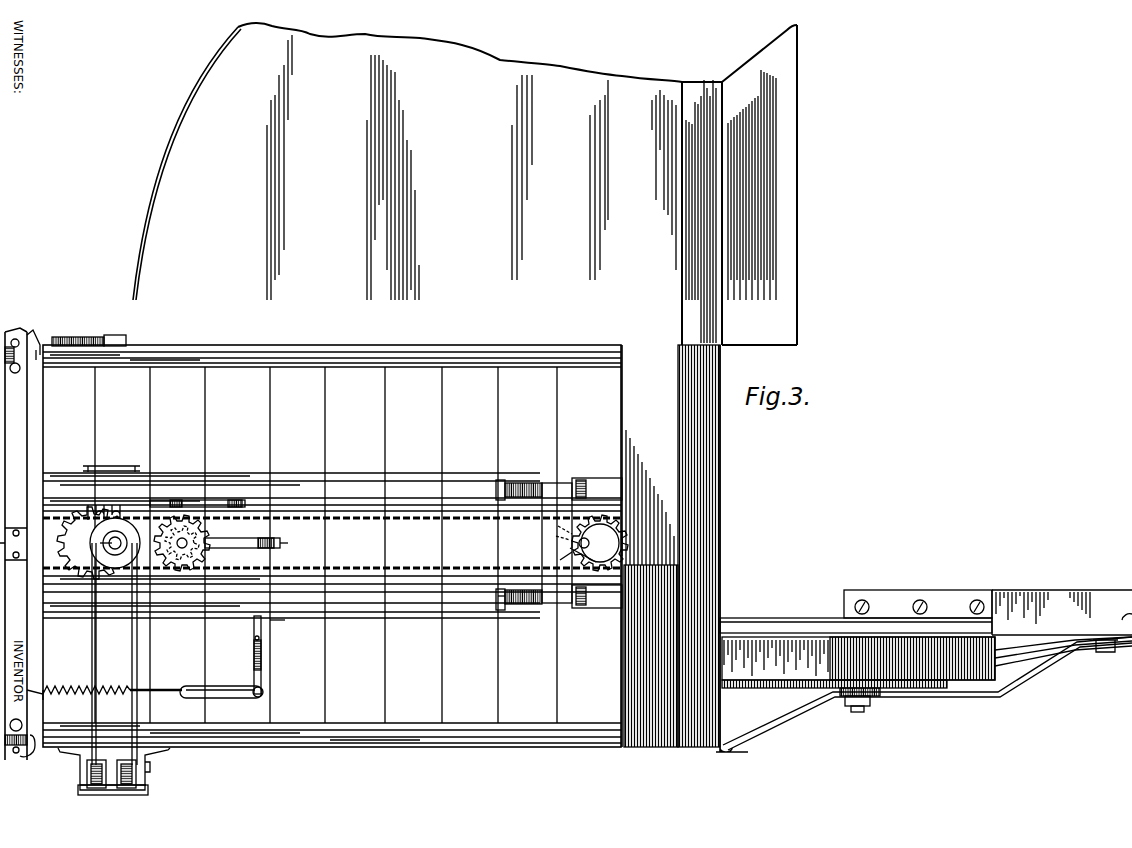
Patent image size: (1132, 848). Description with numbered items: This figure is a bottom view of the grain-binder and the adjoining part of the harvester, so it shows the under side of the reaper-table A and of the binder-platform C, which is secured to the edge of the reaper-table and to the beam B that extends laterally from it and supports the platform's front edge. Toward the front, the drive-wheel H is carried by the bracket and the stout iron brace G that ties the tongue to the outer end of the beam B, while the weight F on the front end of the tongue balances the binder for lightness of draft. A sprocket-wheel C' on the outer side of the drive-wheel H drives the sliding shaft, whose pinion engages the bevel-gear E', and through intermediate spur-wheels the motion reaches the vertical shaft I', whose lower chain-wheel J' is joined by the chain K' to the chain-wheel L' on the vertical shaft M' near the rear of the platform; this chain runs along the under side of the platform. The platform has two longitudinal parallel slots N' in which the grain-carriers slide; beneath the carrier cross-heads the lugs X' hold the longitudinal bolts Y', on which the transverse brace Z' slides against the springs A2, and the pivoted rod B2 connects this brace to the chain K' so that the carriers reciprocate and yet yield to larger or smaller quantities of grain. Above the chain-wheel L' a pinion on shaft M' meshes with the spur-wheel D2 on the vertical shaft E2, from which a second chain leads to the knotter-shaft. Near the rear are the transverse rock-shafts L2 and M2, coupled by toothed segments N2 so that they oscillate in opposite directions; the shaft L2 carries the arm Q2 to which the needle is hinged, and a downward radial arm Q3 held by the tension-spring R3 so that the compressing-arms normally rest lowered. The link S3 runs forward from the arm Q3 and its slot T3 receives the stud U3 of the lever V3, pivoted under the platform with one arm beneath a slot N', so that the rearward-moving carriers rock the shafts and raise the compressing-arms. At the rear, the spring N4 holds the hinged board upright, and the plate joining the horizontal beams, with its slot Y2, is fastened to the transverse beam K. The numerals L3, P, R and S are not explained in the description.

The reaper-table A is at (427, 161).
The beam B is at (709, 388).
The binder-platform C is at (332, 546).
The longitudinal slots N' is at (332, 546).
The chain K' is at (343, 530).
The spring N4 is at (89, 332).
The transverse shaft M2 is at (83, 468).
The transverse shaft L2 is at (137, 488).
The spur-wheel D2 is at (93, 543).
The vertical shaft E2 is at (115, 533).
The bevel-gear E' is at (84, 544).
The vertical shaft M' is at (194, 543).
The chain-wheel L' is at (242, 533).
The slot Y2 is at (292, 544).
The transverse brace Z' is at (582, 543).
The springs A2 is at (523, 486).
The lugs X' is at (486, 546).
The longitudinal bolts Y' is at (485, 587).
The chain-wheel J' is at (592, 543).
The vertical shaft I' is at (590, 544).
The pivoted rod B2 is at (558, 554).
The sprocket-wheel C' is at (636, 543).
The arm Q2 is at (92, 642).
The tension-spring R3 is at (86, 678).
The radial arm Q3 is at (170, 689).
The link or rod S3 is at (217, 684).
The slot T3 is at (238, 690).
The lever V3 is at (284, 656).
The stud U3 is at (257, 697).
The toothed segments N2 is at (87, 770).
The plate L3 is at (92, 790).
The weight F is at (21, 544).
The bar P is at (788, 633).
The drive-wheel H is at (798, 660).
The transverse beam K is at (988, 621).
The rod R is at (1063, 647).
The rod S is at (1063, 661).
The brace G is at (778, 722).